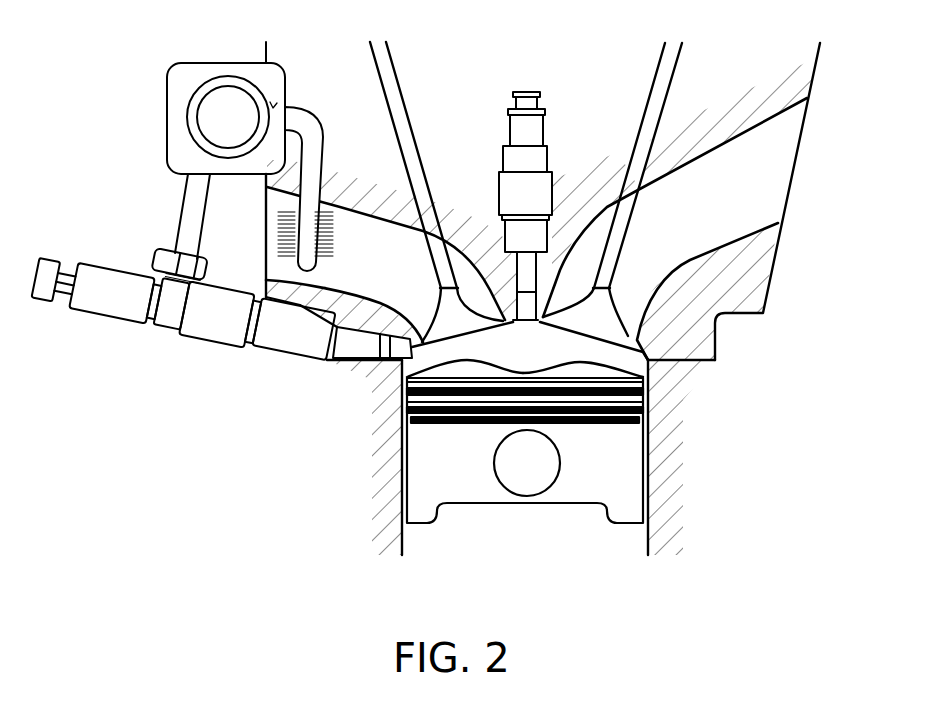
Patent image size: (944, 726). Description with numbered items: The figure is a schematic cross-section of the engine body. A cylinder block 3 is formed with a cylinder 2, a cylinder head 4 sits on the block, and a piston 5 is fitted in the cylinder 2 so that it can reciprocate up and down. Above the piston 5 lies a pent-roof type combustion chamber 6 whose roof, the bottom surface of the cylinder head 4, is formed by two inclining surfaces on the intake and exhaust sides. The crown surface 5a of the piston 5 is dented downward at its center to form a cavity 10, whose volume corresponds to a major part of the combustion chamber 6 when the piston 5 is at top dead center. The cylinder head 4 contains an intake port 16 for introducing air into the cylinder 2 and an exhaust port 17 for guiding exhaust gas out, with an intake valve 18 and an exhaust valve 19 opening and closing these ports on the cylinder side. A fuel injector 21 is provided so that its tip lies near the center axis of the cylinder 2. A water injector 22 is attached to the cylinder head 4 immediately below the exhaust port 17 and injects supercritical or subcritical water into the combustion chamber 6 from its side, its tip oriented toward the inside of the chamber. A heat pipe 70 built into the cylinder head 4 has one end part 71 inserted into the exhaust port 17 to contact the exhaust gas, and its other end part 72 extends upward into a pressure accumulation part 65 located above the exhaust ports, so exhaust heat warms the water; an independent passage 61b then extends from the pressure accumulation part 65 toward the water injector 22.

The cylinder 2 is at (403, 532).
The cylinder block 3 is at (387, 488).
The cylinder head 4 is at (750, 285).
The piston 5 is at (590, 487).
The crown surface 5a is at (590, 362).
The combustion chamber 6 is at (537, 360).
The cavity 10 is at (490, 358).
The intake port 16 is at (735, 238).
The exhaust port 17 is at (350, 217).
The intake valve 18 is at (663, 77).
The exhaust valve 19 is at (397, 88).
The fuel injector 21 is at (533, 132).
The water injector 22 is at (105, 308).
The independent passage 61b is at (187, 202).
The pressure accumulation part 65 is at (173, 88).
The heat pipe 70 is at (310, 128).
The end part 71 is at (265, 263).
The other end part 72 is at (272, 105).